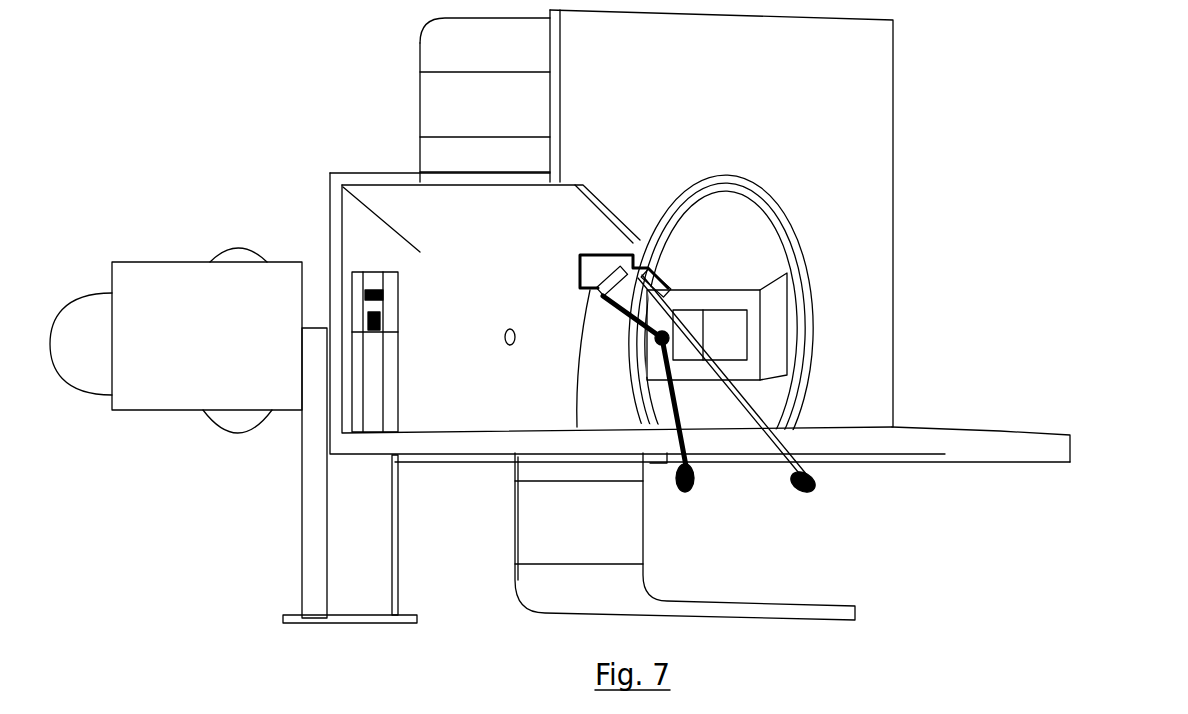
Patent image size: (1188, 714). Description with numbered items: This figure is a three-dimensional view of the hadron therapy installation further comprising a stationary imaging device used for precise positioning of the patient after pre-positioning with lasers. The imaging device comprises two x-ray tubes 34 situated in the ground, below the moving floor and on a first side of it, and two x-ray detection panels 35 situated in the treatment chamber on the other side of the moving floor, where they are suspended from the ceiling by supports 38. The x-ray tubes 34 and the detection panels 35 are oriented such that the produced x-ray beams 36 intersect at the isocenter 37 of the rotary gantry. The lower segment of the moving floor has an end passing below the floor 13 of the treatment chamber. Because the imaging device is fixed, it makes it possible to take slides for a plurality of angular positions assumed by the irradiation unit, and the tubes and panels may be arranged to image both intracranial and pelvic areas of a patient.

The floor of the treatment chamber 13 is at (1005, 435).
The x-ray tube 34 is at (697, 480).
The x-ray detection panel 35 is at (605, 290).
The x-ray beam 36 is at (650, 390).
The isocenter 37 is at (655, 340).
The support 38 is at (580, 262).